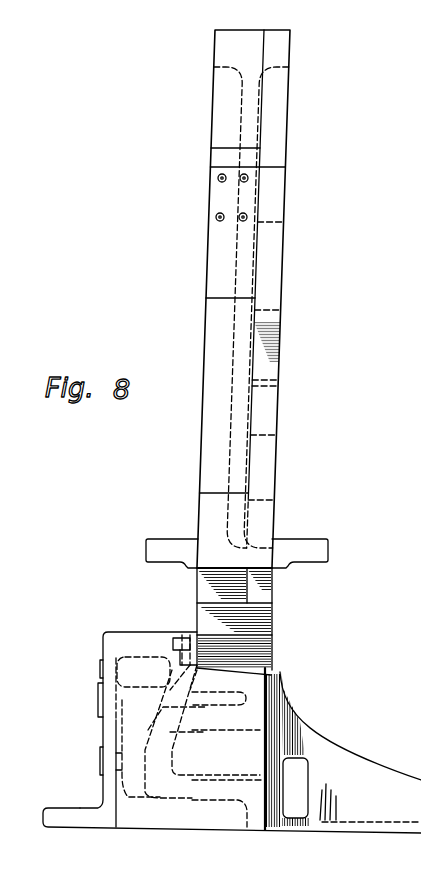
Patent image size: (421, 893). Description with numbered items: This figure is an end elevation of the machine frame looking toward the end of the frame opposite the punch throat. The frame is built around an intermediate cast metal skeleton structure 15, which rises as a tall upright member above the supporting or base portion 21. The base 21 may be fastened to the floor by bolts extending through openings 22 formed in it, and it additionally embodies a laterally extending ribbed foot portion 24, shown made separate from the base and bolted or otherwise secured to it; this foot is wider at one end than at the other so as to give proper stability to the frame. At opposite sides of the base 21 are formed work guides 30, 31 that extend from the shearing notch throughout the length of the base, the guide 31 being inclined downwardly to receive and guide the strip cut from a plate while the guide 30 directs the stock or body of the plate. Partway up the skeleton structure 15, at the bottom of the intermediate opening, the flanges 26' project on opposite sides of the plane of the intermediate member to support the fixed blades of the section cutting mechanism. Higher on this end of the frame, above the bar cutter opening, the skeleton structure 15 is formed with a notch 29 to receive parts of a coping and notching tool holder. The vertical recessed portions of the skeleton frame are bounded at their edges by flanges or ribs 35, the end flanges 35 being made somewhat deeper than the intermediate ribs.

The intermediate cast metal skeleton structure 15 is at (283, 276).
The supporting or base portion 21 is at (103, 735).
The openings 22 is at (65, 800).
The laterally extending ribbed foot portion 24 is at (378, 775).
The flanges 26' is at (224, 534).
The notch 29 is at (283, 353).
The work guide 30 is at (193, 628).
The work guide 31 is at (275, 657).
The end flanges or ribs 35 is at (212, 211).